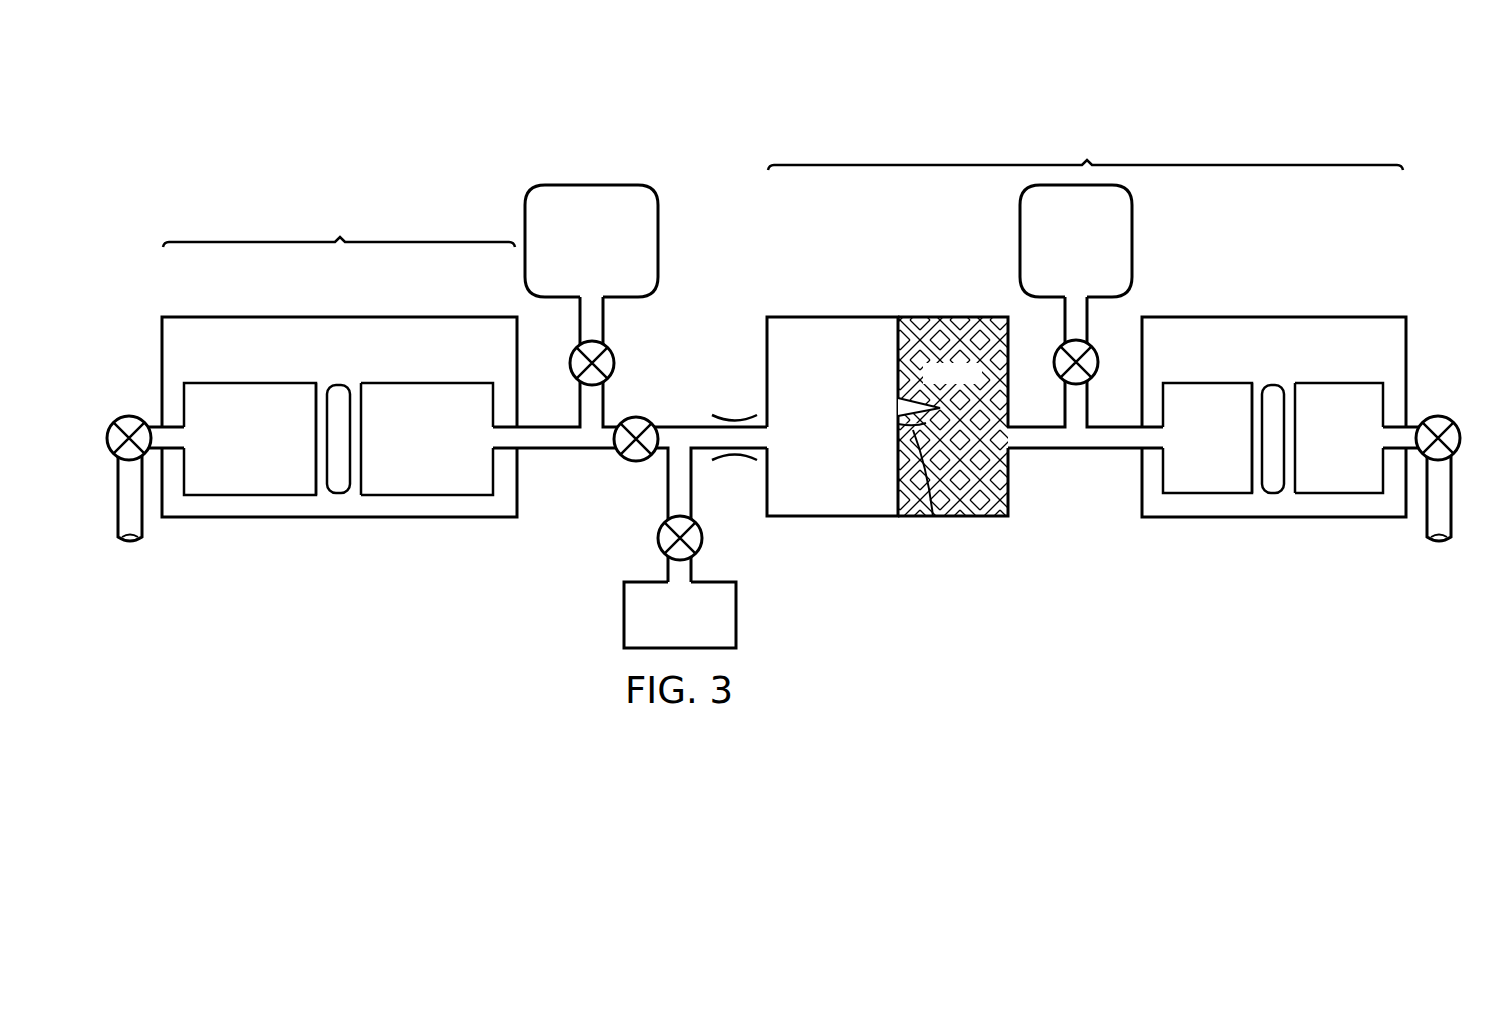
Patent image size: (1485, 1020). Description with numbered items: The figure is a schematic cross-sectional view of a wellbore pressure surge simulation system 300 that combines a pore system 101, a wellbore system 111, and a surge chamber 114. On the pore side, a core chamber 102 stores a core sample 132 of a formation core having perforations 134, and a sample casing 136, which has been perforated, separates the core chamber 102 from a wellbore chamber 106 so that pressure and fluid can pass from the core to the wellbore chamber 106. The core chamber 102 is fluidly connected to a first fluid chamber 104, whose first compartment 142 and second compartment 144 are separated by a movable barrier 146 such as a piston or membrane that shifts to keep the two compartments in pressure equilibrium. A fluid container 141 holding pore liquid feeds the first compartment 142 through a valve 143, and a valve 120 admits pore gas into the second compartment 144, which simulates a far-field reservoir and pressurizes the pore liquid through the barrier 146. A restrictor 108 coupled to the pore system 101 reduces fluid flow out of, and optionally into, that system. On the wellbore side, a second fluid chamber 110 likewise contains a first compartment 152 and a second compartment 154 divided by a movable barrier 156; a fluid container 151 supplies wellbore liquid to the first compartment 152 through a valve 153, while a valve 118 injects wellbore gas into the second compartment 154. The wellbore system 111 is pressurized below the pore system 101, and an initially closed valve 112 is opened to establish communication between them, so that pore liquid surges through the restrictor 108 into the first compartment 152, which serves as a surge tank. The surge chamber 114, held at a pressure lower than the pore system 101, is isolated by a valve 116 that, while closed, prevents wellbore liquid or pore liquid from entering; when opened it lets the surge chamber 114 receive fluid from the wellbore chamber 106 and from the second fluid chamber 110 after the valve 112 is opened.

The wellbore pressure surge simulation system 300 is at (234, 95).
The wellbore system 111 is at (339, 214).
The pore system 101 is at (1085, 136).
The second fluid chamber 110 is at (244, 311).
The second compartment 154 is at (252, 392).
The movable barrier 156 is at (337, 392).
The first compartment 152 is at (425, 392).
The valve 118 is at (128, 415).
The fluid container 151 is at (590, 185).
The valve 153 is at (615, 360).
The valve 112 is at (635, 461).
The restrictor 108 is at (731, 397).
The valve 116 is at (657, 538).
The surge chamber 114 is at (624, 617).
The wellbore chamber 106 is at (833, 324).
The core chamber 102 is at (918, 322).
The core sample 132 is at (978, 322).
The sample casing 136 is at (898, 482).
The perforations 134 is at (933, 517).
The fluid container 141 is at (1132, 238).
The valve 143 is at (1099, 363).
The first fluid chamber 104 is at (1323, 311).
The first compartment 142 is at (1208, 392).
The movable barrier 146 is at (1275, 392).
The second compartment 144 is at (1342, 392).
The valve 120 is at (1440, 415).